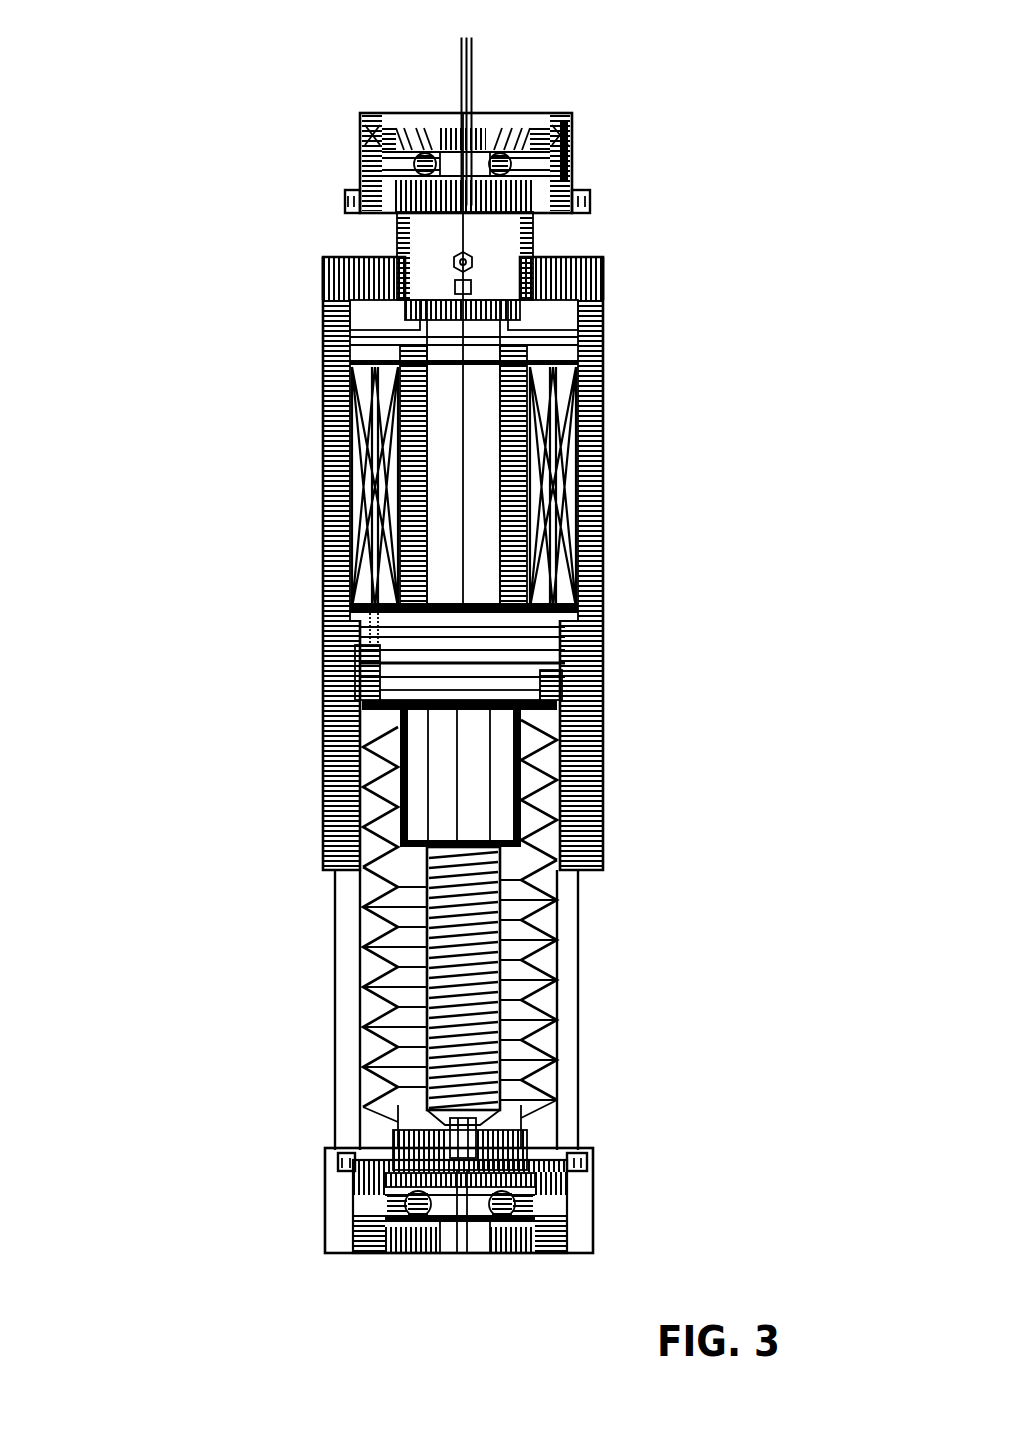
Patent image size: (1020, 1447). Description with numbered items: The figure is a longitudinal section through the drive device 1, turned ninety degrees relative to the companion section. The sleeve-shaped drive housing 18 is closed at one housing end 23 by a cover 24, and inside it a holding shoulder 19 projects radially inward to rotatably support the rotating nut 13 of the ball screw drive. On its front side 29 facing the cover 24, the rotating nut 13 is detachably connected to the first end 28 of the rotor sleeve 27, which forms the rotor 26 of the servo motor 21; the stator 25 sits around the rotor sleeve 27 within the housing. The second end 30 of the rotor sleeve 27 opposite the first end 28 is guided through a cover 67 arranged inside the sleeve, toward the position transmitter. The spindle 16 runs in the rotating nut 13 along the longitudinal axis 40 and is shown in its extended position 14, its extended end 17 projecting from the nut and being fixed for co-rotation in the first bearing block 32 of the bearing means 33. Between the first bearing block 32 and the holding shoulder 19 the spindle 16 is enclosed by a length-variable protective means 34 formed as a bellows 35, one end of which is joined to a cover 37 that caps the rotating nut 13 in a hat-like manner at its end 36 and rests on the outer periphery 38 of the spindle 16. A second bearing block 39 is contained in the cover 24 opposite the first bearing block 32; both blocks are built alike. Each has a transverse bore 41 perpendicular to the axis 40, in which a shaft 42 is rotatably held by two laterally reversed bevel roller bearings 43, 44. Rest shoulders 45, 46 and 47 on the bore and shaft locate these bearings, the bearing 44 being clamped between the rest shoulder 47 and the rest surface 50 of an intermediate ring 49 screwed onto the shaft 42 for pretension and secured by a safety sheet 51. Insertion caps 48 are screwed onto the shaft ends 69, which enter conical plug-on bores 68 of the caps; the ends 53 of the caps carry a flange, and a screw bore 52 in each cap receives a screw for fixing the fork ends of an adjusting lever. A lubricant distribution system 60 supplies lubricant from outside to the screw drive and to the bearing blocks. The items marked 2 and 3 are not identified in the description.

The drive device 1 is at (126, 362).
The fastening screw 2 is at (362, 1253).
The fastening screw 3 is at (380, 112).
The rotating nut 13 is at (478, 745).
The extended position 14 is at (520, 1080).
The spindle 16 is at (552, 978).
The extended end 17 is at (522, 1112).
The drive housing 18 is at (603, 530).
The holding shoulder 19 is at (603, 678).
The servo motor 21 is at (603, 500).
The housing end 23 is at (603, 362).
The cover 24 is at (603, 270).
The stator 25 is at (545, 577).
The rotor 26 is at (530, 487).
The rotor sleeve 27 is at (575, 452).
The first end 28 is at (323, 568).
The front side 29 is at (427, 585).
The second end 30 is at (540, 235).
The first bearing block 32 is at (320, 1214).
The bearing means 33 is at (620, 172).
The protective means 34 is at (558, 1000).
The bellows 35 is at (557, 962).
The end 36 is at (557, 890).
The cover 37 is at (603, 775).
The outer periphery 38 is at (360, 955).
The second bearing block 39 is at (590, 158).
The longitudinal axis 40 is at (540, 1040).
The transverse bore 41 is at (397, 236).
The shaft 42 is at (458, 112).
The bevel roller bearing 43 is at (410, 112).
The bevel roller bearing 44 is at (502, 112).
The rest shoulder 45 is at (400, 112).
The rest shoulder 46 is at (434, 112).
The rest shoulder 47 is at (478, 112).
The insertion cap 48 is at (365, 160).
The intermediate ring 49 is at (400, 1253).
The rest surface 50 is at (524, 112).
The safety sheet 51 is at (398, 1253).
The screw bore 52 is at (560, 222).
The ends 53 is at (572, 135).
The lubricant distribution system 60 is at (323, 670).
The cover 67 is at (603, 312).
The plug-on bore 68 is at (510, 1253).
The shaft end 69 is at (527, 1140).